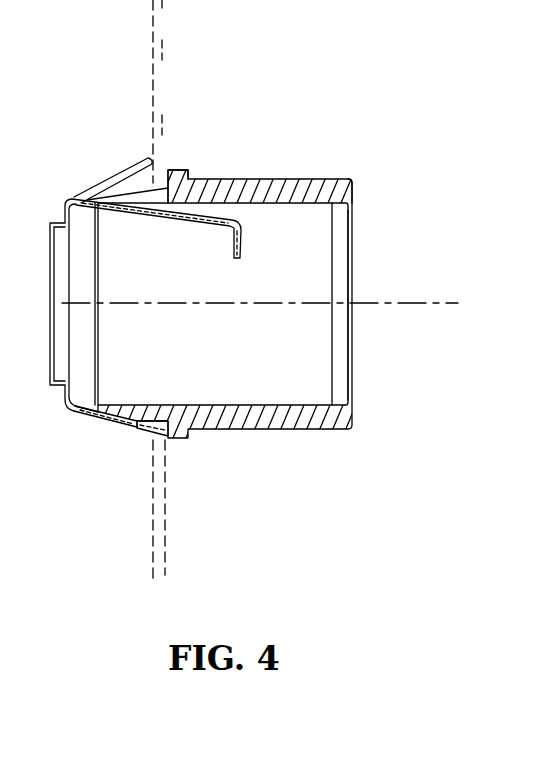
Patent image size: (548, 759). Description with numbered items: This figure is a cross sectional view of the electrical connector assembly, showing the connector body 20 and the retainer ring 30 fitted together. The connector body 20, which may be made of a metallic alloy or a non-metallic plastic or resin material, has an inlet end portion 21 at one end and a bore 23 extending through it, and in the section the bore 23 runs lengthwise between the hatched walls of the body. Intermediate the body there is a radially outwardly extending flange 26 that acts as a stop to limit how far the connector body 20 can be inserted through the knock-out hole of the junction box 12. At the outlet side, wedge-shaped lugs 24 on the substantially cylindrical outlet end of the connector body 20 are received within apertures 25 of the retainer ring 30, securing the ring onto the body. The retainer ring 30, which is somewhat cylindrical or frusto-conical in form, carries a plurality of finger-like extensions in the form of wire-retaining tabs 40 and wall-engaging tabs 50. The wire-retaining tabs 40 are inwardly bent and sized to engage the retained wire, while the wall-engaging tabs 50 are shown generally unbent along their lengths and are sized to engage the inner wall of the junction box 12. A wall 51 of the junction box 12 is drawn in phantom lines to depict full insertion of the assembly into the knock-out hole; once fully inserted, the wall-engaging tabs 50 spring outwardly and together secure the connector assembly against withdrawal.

The junction box 12 is at (162, 76).
The connector body 20 is at (243, 180).
The inlet end portion 21 is at (350, 178).
The bore 23 is at (345, 338).
The wedge-shaped lugs 24 is at (112, 423).
The apertures 25 is at (97, 417).
The flange 26 is at (180, 172).
The retainer ring 30 is at (65, 200).
The wire-retaining tabs 40 is at (173, 220).
The wall-engaging tabs 50 is at (117, 175).
The wall 51 is at (157, 60).